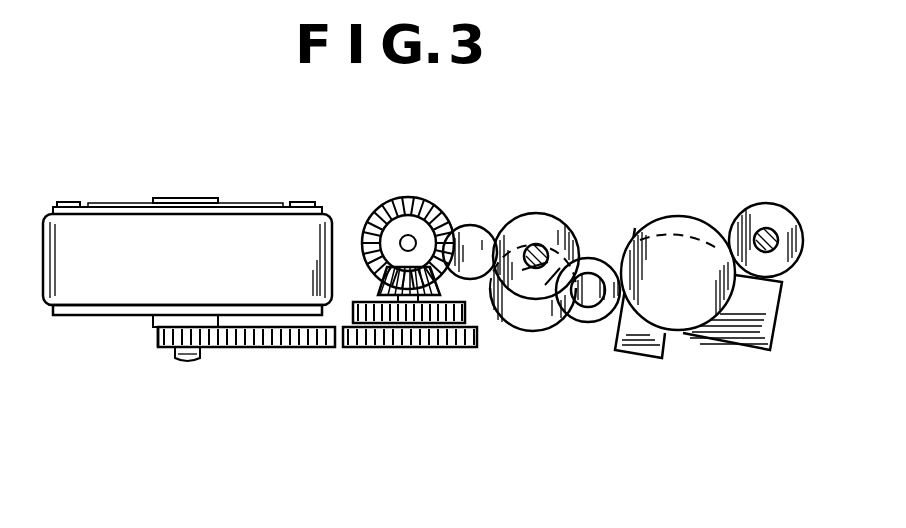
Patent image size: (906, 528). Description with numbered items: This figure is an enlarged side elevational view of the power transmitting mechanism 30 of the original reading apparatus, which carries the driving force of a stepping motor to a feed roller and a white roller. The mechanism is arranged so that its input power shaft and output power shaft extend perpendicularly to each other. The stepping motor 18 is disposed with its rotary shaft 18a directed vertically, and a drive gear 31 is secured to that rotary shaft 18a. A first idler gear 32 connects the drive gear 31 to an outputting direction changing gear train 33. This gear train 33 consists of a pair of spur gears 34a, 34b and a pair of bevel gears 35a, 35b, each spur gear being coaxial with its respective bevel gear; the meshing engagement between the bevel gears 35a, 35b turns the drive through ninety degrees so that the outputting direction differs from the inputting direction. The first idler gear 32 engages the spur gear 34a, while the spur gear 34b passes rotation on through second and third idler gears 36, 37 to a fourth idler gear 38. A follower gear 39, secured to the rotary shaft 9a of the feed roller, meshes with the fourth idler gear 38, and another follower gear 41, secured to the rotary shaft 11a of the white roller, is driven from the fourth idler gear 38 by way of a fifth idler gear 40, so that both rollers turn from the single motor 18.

The stepping motor 18 is at (133, 225).
The rotary shaft 18a is at (185, 362).
The power transmitting mechanism 30 is at (386, 162).
The drive gear 31 is at (158, 340).
The first idler gear 32 is at (263, 347).
The outputting direction changing gear train 33 is at (362, 207).
The spur gear 34a is at (383, 347).
The spur gear 34b is at (445, 222).
The bevel gear 35a is at (440, 288).
The bevel gear 35b is at (413, 198).
The second idler gear 36 is at (495, 238).
The third idler gear 37 is at (535, 328).
The fourth idler gear 38 is at (590, 318).
The follower gear 39 is at (545, 222).
The fifth idler gear 40 is at (672, 220).
The follower gear 41 is at (760, 205).
The rotary shaft 11a is at (772, 232).
The rotary shaft 9a is at (528, 266).